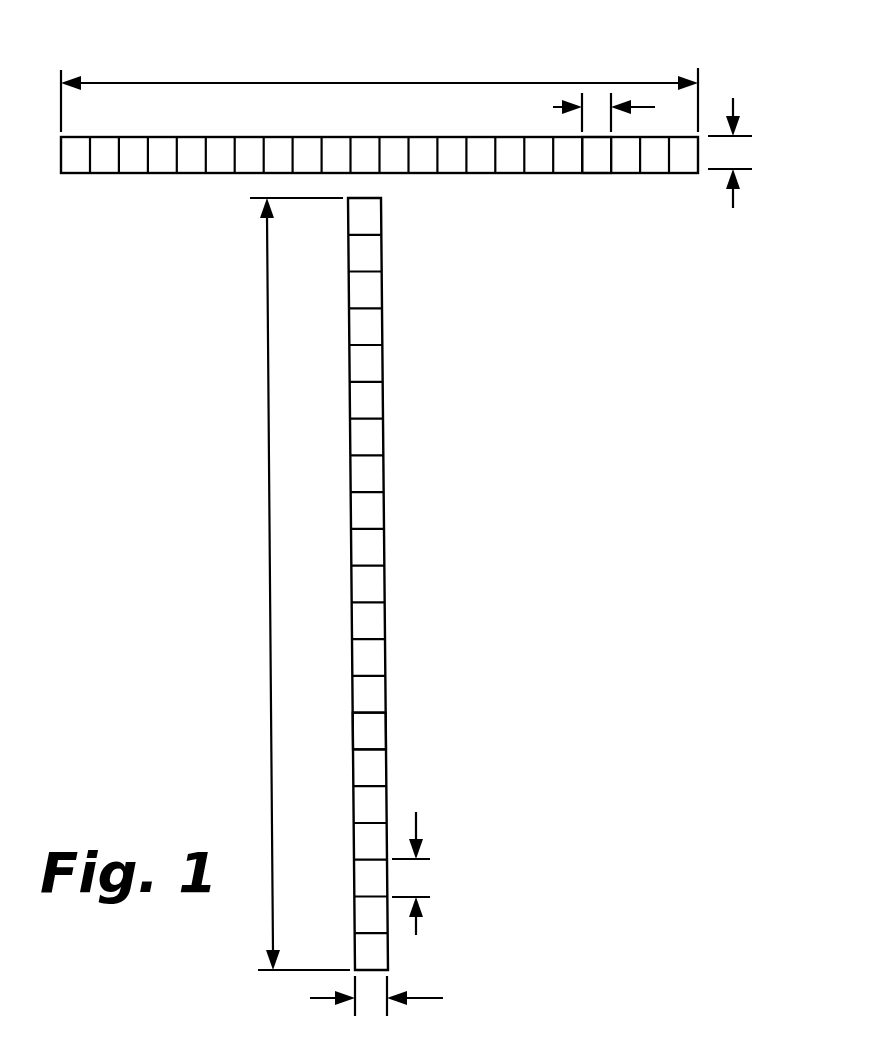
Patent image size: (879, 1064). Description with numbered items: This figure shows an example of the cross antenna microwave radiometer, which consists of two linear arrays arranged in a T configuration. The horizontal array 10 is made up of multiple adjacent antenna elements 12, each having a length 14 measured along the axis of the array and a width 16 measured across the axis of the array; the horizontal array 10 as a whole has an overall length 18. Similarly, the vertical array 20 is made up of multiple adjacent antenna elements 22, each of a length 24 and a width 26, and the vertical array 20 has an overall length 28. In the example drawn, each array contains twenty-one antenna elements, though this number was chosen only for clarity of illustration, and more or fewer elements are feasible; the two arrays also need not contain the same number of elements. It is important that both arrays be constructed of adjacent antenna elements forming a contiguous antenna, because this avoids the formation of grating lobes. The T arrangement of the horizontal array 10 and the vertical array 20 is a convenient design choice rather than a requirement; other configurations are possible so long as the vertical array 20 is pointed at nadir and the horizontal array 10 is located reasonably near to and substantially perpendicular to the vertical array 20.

The horizontal array 10 is at (549, 53).
The antenna element 12 is at (449, 135).
The length of antenna element 14 is at (555, 107).
The width of antenna element 16 is at (733, 98).
The overall length of horizontal array 18 is at (442, 81).
The vertical array 20 is at (239, 478).
The antenna element 22 is at (353, 724).
The length of antenna element 24 is at (416, 821).
The width of antenna element 26 is at (424, 998).
The overall length of vertical array 28 is at (270, 588).